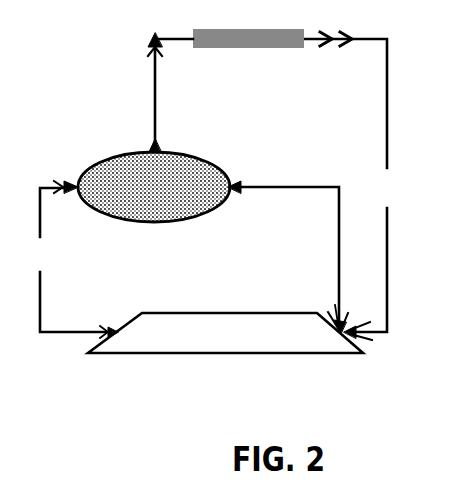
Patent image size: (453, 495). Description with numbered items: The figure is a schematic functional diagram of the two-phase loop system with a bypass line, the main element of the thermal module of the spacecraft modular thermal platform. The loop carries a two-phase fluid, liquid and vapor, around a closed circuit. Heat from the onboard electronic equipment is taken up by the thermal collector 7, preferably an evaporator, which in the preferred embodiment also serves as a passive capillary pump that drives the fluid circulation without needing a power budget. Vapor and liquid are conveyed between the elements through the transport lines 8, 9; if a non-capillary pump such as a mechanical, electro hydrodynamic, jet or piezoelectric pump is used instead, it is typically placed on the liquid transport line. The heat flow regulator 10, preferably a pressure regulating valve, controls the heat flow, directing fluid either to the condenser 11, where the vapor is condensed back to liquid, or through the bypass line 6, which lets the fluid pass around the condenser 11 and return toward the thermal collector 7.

The bypass line 6 is at (288, 242).
The thermal collector 7 is at (225, 333).
The transport line 8 is at (75, 259).
The transport line 9 is at (350, 186).
The heat flow regulator 10 is at (142, 194).
The condenser 11 is at (235, 37).